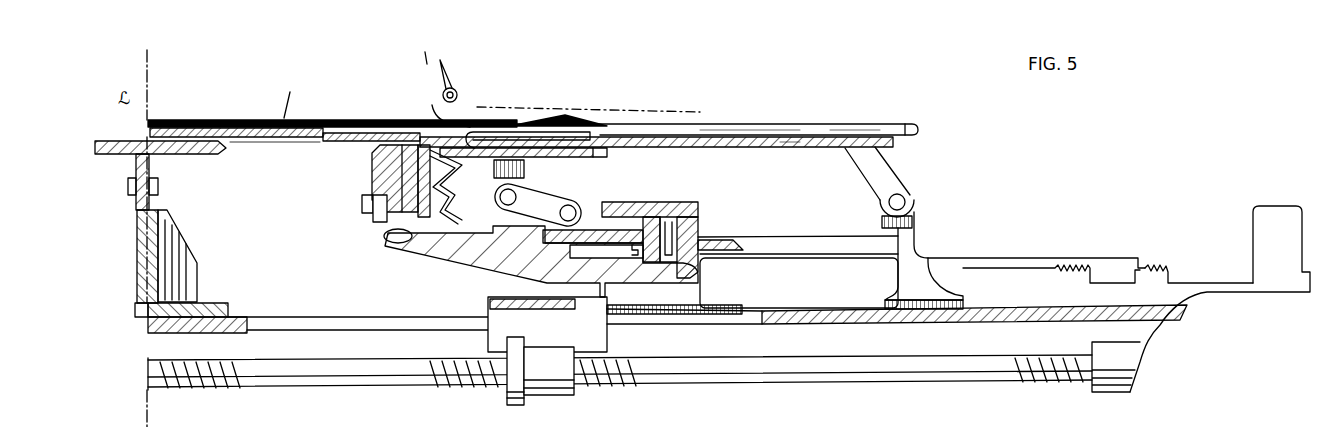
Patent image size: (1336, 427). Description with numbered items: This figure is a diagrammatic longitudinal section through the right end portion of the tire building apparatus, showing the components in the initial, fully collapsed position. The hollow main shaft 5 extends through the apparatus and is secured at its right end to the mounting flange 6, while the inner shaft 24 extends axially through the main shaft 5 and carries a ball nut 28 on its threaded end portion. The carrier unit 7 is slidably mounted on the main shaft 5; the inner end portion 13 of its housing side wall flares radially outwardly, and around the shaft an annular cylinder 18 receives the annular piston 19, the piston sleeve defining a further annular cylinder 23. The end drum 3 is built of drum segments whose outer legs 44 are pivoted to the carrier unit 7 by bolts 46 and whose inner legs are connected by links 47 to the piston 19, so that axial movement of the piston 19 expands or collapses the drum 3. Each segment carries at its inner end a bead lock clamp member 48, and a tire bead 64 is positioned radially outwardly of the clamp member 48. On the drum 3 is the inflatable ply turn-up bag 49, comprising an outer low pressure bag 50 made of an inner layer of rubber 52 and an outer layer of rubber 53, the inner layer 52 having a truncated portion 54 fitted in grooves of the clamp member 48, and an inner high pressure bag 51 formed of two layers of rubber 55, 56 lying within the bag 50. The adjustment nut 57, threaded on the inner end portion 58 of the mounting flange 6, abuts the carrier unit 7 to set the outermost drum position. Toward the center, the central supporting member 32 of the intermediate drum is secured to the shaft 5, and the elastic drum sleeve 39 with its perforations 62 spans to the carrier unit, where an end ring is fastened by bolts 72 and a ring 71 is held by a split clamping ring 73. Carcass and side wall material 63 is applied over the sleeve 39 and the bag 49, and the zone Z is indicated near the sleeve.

The end drum 3 is at (790, 143).
The main shaft 5 is at (998, 312).
The mounting flange 6 is at (1280, 212).
The carrier unit 7 is at (916, 248).
The inner end portion of the side wall 13 is at (455, 258).
The annular cylinder 18 is at (698, 213).
The annular piston 19 is at (612, 230).
The annular cylinder 23 is at (615, 258).
The inner shaft 24 is at (320, 390).
The ball nut 28 is at (524, 398).
The central supporting member 32 is at (137, 256).
The drum sleeve 39 is at (275, 159).
The outer leg 44 is at (890, 162).
The bolt 46 is at (902, 205).
The link 47 is at (535, 202).
The bead lock clamp member 48 is at (420, 140).
The inflatable ply turn-up bag 49 is at (921, 126).
The outer low pressure bag 50 is at (841, 138).
The inner high pressure bag 51 is at (592, 133).
The inner layer of rubber 52 is at (748, 141).
The outer layer of rubber 53 is at (745, 133).
The truncated portion 54 is at (432, 120).
The layer of rubber 55 is at (578, 150).
The layer of rubber 56 is at (572, 122).
The adjustment nut 57 is at (1000, 258).
The inner end portion of the mounting flange 58 is at (1147, 267).
The perforations 62 is at (262, 137).
The carcass and side wall material 63 is at (236, 122).
The tire bead 64 is at (456, 88).
The ring 71 is at (372, 177).
The bolt 72 is at (365, 208).
The split clamping ring 73 is at (405, 240).
The zone Z is at (280, 152).